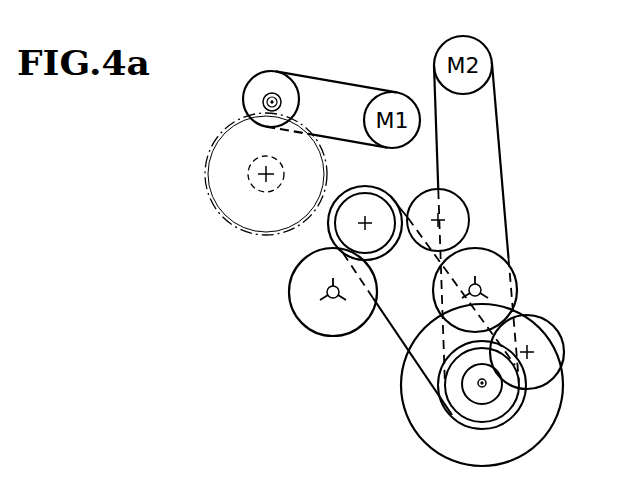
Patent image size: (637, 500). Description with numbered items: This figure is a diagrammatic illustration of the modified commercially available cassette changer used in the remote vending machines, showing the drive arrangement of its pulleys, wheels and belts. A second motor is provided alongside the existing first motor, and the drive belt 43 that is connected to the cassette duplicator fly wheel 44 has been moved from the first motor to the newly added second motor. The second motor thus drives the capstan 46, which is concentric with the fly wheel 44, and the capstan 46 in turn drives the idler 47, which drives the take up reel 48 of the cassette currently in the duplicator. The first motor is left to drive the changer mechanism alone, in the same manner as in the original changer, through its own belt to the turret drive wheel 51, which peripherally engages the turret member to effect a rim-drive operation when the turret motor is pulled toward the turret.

The drive belt 43 is at (498, 125).
The cassette duplicator fly wheel 44 is at (527, 433).
The capstan 46 is at (481, 386).
The idler 47 is at (550, 345).
The take up reel 48 is at (507, 278).
The turret drive wheel 51 is at (272, 101).